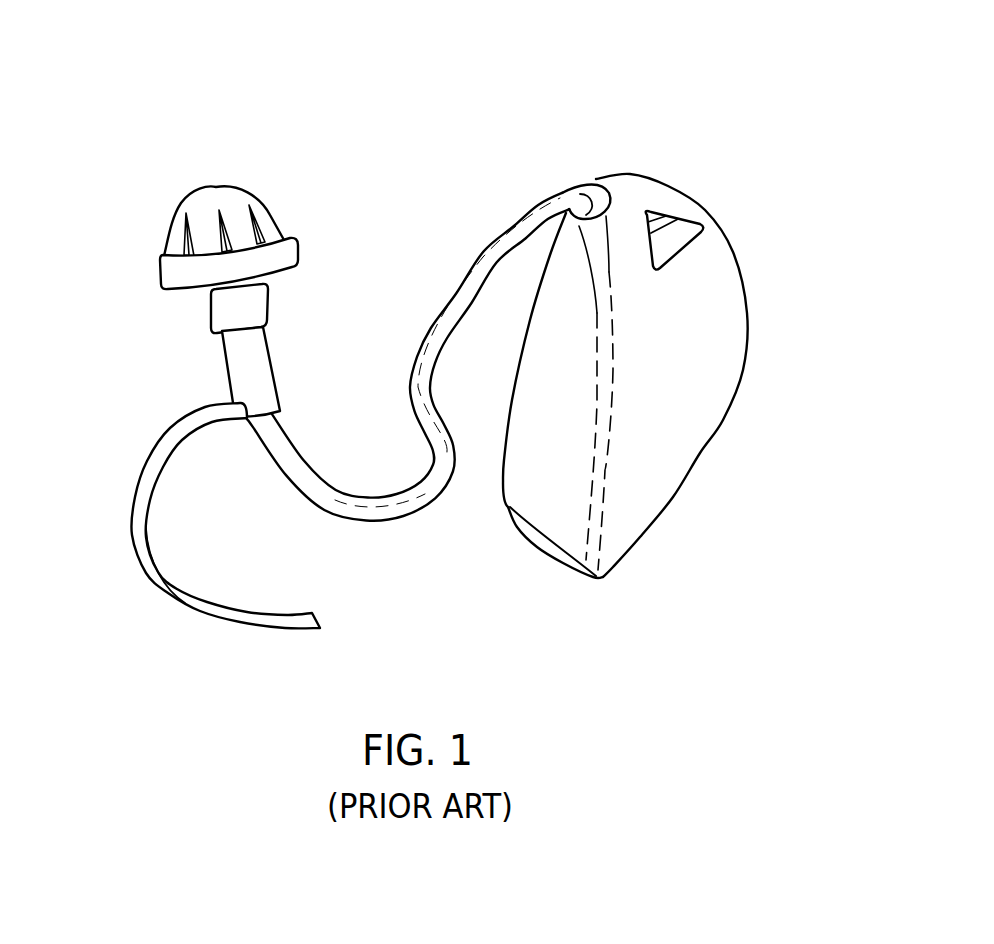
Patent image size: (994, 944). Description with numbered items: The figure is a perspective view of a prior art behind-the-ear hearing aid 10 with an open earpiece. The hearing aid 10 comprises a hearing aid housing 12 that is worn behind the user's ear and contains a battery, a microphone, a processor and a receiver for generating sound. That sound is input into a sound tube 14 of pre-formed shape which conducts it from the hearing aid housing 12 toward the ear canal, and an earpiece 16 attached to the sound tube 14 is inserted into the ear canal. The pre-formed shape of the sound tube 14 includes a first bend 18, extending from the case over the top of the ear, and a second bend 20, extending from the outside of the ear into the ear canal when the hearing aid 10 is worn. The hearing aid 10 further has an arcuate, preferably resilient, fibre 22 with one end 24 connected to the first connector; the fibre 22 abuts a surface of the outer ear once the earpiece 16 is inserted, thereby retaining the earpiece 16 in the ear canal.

The BTE hearing aid 10 is at (603, 45).
The hearing aid housing 12 is at (703, 370).
The sound tube 14 is at (437, 334).
The earpiece 16 is at (160, 270).
The first bend 18 is at (508, 217).
The second bend 20 is at (397, 521).
The fibre 22 is at (132, 533).
The end 24 is at (180, 427).